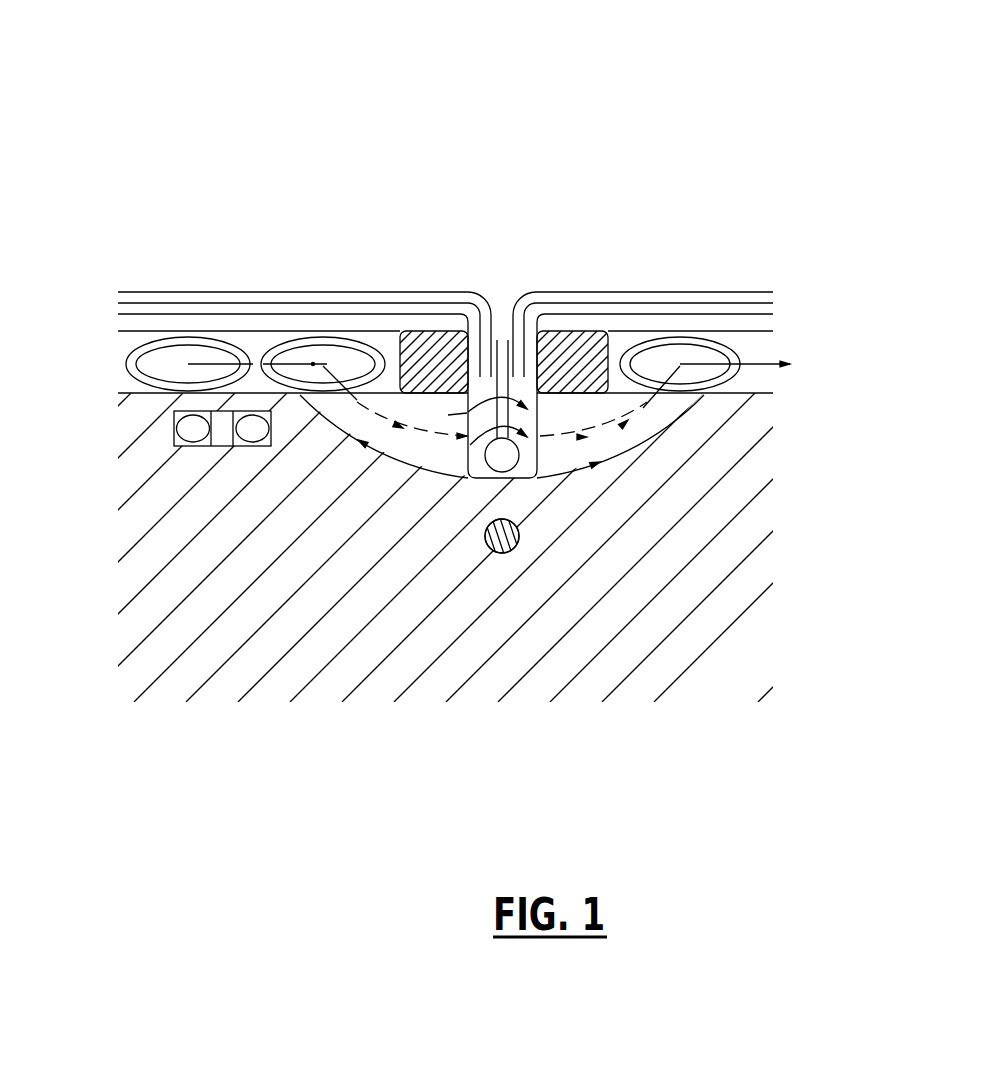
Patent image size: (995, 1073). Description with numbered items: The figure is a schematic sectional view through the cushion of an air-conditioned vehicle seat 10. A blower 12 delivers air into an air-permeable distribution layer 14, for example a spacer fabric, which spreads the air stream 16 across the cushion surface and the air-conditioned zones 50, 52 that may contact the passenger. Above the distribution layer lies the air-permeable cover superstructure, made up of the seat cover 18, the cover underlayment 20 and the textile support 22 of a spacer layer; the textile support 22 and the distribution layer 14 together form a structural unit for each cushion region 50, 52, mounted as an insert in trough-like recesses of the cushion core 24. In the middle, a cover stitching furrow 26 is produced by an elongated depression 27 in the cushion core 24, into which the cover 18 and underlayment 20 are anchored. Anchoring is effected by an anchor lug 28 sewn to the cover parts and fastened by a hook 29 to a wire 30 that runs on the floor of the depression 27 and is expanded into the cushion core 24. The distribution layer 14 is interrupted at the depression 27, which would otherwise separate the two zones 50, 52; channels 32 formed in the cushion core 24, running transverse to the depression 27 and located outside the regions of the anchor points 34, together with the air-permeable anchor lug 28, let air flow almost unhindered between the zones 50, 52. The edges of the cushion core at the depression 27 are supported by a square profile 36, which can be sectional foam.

The vehicle seat 10 is at (385, 97).
The blower 12 is at (188, 447).
The distribution layer 14 is at (745, 376).
The air stream 16 is at (253, 352).
The seat cover 18 is at (745, 290).
The cover underlayment 20 is at (778, 302).
The textile support 22 is at (768, 325).
The cushion core 24 is at (733, 602).
The cover stitching furrow 26 is at (503, 298).
The depression 27 is at (543, 450).
The anchor lug 28 is at (236, 702).
The hook 29 is at (507, 468).
The wire 30 is at (506, 553).
The channels 32 is at (118, 667).
The anchor points 34 is at (527, 747).
The square profile 36 is at (562, 345).
The air-conditioned zone 50 is at (202, 280).
The air-conditioned zone 52 is at (677, 265).